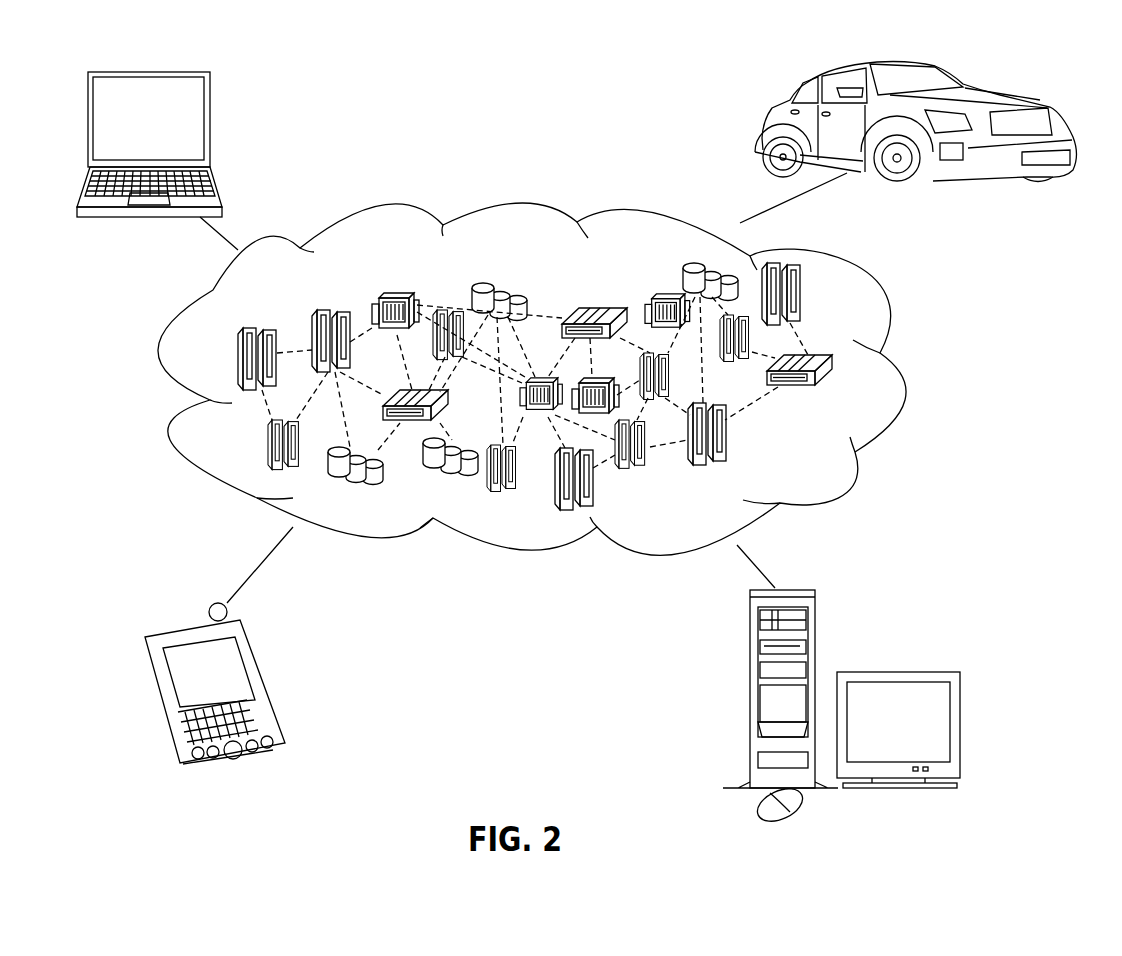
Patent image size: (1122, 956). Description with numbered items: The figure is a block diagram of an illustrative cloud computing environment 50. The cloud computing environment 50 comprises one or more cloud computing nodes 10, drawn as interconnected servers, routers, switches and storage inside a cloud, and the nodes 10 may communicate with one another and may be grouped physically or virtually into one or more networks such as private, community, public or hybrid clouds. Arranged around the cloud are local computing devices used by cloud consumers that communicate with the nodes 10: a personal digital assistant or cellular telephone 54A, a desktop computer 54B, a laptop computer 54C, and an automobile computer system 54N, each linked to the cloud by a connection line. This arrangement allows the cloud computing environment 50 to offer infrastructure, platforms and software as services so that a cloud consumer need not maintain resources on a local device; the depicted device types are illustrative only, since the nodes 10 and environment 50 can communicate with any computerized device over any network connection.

The laptop computer 54C is at (212, 105).
The automobile computer system 54N is at (762, 120).
The personal digital assistant (PDA) or cellular telephone 54A is at (258, 653).
The desktop computer 54B is at (750, 642).
The cloud computing environment 50 is at (558, 379).
The cloud computing nodes 10 is at (818, 461).